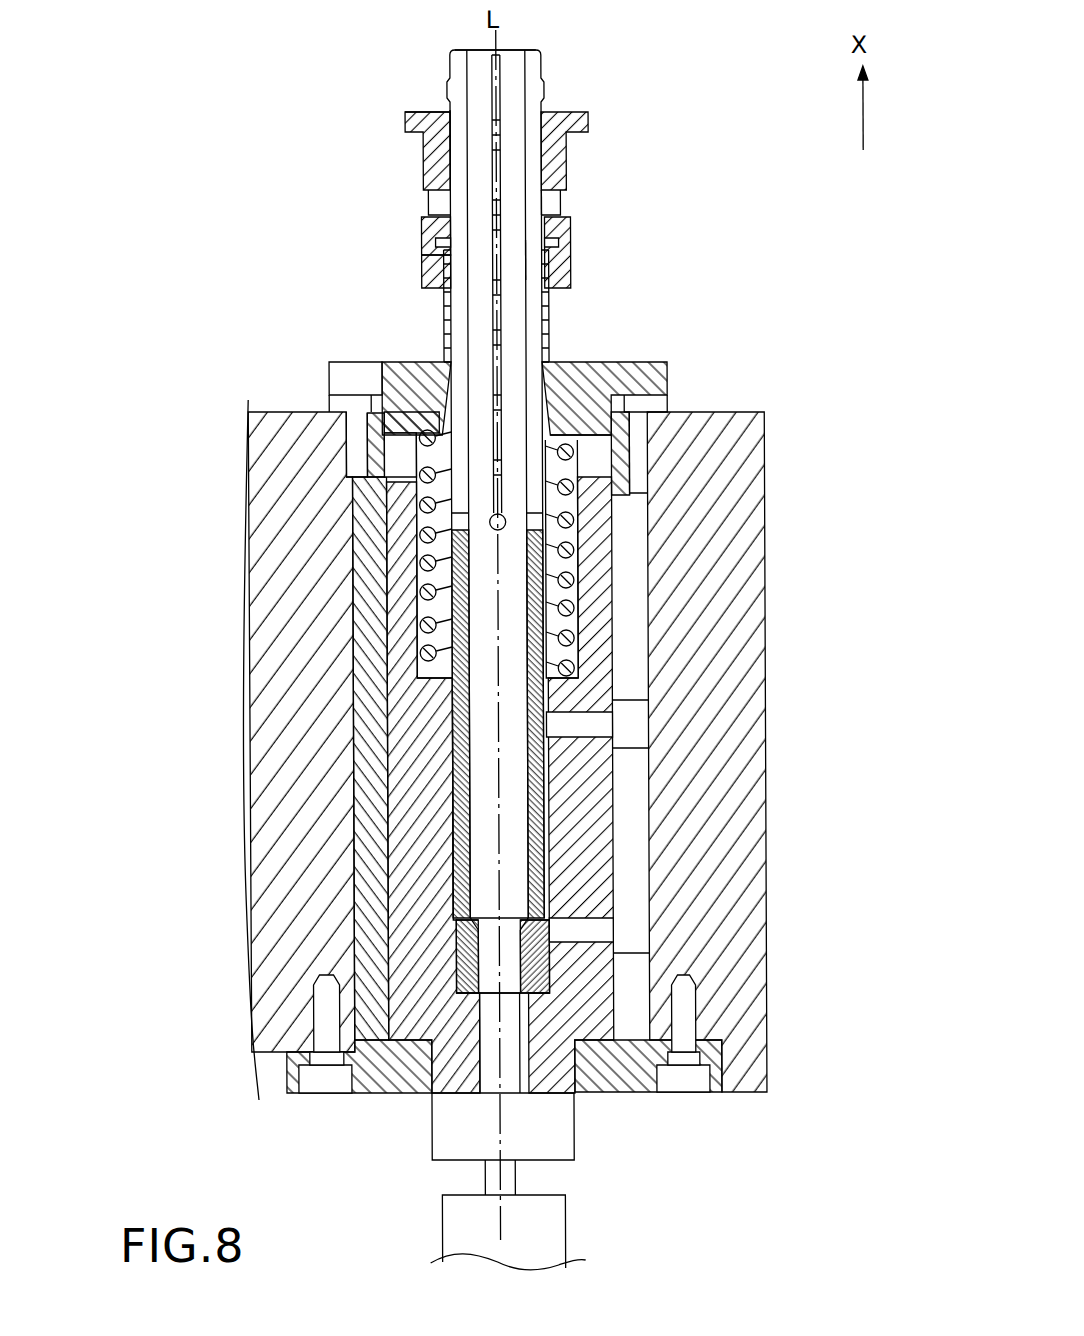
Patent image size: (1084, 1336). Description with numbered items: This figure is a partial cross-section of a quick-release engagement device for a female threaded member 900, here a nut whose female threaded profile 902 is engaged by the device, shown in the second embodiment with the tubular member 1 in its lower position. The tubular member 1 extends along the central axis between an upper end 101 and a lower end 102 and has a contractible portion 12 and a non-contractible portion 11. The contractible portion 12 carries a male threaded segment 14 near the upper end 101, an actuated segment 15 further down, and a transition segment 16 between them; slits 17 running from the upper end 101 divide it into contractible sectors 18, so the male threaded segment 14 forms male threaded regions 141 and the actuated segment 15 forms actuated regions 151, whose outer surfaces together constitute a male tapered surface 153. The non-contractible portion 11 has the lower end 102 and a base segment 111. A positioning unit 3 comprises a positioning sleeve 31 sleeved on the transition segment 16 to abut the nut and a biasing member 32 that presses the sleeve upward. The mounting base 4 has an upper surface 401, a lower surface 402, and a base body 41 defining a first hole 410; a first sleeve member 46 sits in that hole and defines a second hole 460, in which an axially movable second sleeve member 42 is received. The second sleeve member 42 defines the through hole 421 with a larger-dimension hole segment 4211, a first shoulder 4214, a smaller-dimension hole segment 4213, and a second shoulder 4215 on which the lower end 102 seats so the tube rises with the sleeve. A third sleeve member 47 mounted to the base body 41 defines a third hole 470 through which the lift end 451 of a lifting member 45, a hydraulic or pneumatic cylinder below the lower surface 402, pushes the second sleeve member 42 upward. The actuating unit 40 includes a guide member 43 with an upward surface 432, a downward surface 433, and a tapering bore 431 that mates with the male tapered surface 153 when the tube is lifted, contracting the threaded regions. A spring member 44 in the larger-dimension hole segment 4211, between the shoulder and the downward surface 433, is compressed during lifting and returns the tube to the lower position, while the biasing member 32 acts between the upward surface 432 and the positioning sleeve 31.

The tubular member 1 is at (535, 42).
The upper end 101 is at (534, 50).
The non-contractible portion 11 is at (538, 643).
The base segment 111 is at (538, 797).
The lower end 102 is at (518, 993).
The contractible portion 12 is at (548, 195).
The male threaded segment 14 is at (536, 145).
The male threaded regions 141 is at (462, 137).
The actuated segment 15 is at (544, 363).
The actuated regions 151 is at (432, 367).
The transition segment 16 is at (530, 258).
The slits 17 is at (492, 70).
The contractible sectors 18 is at (517, 115).
The positioning unit 3 is at (334, 214).
The positioning sleeve 31 is at (425, 262).
The biasing member 32 is at (447, 318).
The female threaded member 900 is at (418, 152).
The female threaded profile 902 is at (455, 133).
The actuating unit 40 is at (677, 322).
The base body 41 is at (292, 443).
The upper surface 401 is at (730, 410).
The lower surface 402 is at (638, 1092).
The first hole 410 is at (395, 453).
The second sleeve member 42 is at (420, 677).
The through hole 421 is at (453, 808).
The larger-dimension hole segment 4211 is at (577, 540).
The smaller-dimension hole segment 4213 is at (508, 1027).
The first shoulder 4214 is at (435, 672).
The second shoulder 4215 is at (467, 993).
The guide member 43 is at (607, 366).
The tapering bore 431 is at (450, 388).
The upward surface 432 is at (572, 362).
The downward surface 433 is at (607, 450).
The spring member 44 is at (420, 610).
The lifting member 45 is at (547, 1207).
The lift end 451 is at (450, 1130).
The first sleeve member 46 is at (372, 852).
The second hole 460 is at (400, 540).
The third sleeve member 47 is at (395, 1080).
The third hole 470 is at (557, 1080).
The mounting base 4 is at (665, 1130).
The male tapered surface 153 is at (380, 397).